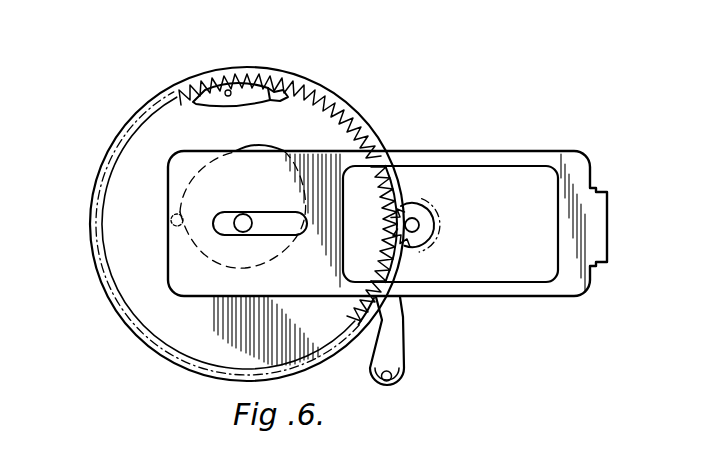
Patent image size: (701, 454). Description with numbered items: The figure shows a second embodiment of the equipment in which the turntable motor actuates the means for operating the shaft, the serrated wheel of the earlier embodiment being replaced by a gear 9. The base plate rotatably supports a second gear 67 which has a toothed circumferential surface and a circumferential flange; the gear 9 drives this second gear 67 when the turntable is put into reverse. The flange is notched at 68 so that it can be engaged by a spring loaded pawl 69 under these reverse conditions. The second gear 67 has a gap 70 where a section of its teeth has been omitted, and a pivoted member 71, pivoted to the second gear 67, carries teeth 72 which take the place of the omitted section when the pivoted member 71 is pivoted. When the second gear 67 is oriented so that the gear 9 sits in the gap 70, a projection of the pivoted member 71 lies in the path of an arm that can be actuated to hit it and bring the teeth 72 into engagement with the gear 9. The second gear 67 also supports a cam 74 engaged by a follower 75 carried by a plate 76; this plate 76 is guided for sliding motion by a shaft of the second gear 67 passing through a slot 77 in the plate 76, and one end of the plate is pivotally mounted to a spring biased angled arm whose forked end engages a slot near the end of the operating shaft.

The gear 9 is at (440, 224).
The second gear 67 is at (143, 163).
The notch 68 is at (357, 122).
The spring loaded pawl 69 is at (397, 344).
The gap 70 is at (289, 85).
The pivoted member 71 is at (212, 103).
The teeth 72 is at (268, 103).
The cam 74 is at (279, 269).
The follower 75 is at (170, 221).
The plate 76 is at (460, 148).
The slot 77 is at (225, 216).